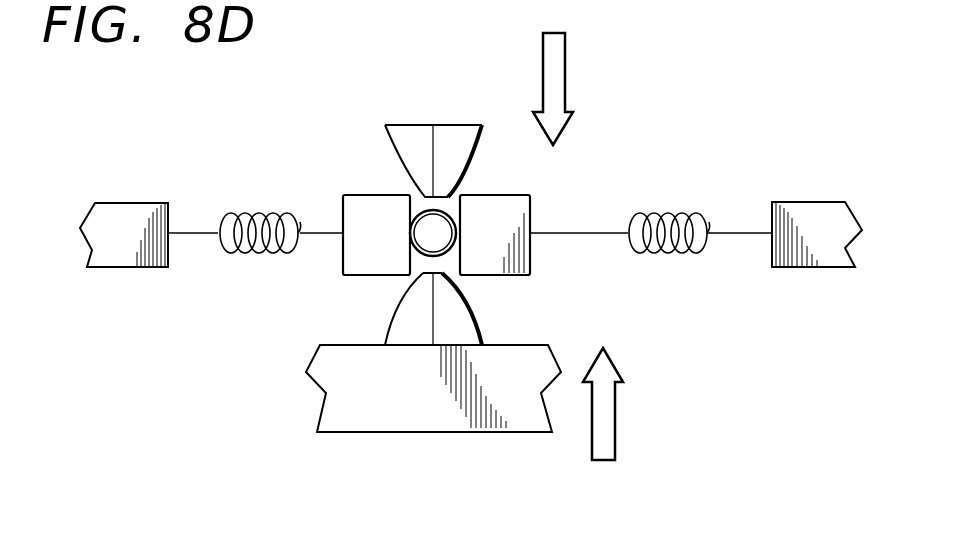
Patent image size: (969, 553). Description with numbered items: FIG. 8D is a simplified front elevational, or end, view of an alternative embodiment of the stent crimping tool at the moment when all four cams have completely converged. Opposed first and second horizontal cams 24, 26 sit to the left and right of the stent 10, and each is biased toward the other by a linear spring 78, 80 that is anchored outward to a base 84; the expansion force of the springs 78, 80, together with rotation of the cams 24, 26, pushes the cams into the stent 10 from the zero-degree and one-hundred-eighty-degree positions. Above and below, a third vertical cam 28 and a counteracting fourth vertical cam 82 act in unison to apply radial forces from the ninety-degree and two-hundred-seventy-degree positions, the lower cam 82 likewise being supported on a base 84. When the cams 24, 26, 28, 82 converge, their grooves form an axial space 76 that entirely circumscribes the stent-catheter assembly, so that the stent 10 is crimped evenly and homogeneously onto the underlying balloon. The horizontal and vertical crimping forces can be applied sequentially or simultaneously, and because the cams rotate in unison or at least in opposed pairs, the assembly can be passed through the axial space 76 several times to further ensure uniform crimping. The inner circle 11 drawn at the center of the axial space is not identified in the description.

The stent 10 is at (395, 228).
The inner core 11 is at (436, 233).
The first horizontal cam 24 is at (342, 263).
The second horizontal cam 26 is at (530, 217).
The third vertical cam 28 is at (447, 133).
The axial space 76 is at (476, 183).
The linear spring 78 is at (260, 200).
The linear spring 80 is at (670, 210).
The fourth vertical cam 82 is at (467, 329).
The base 84 is at (143, 212).